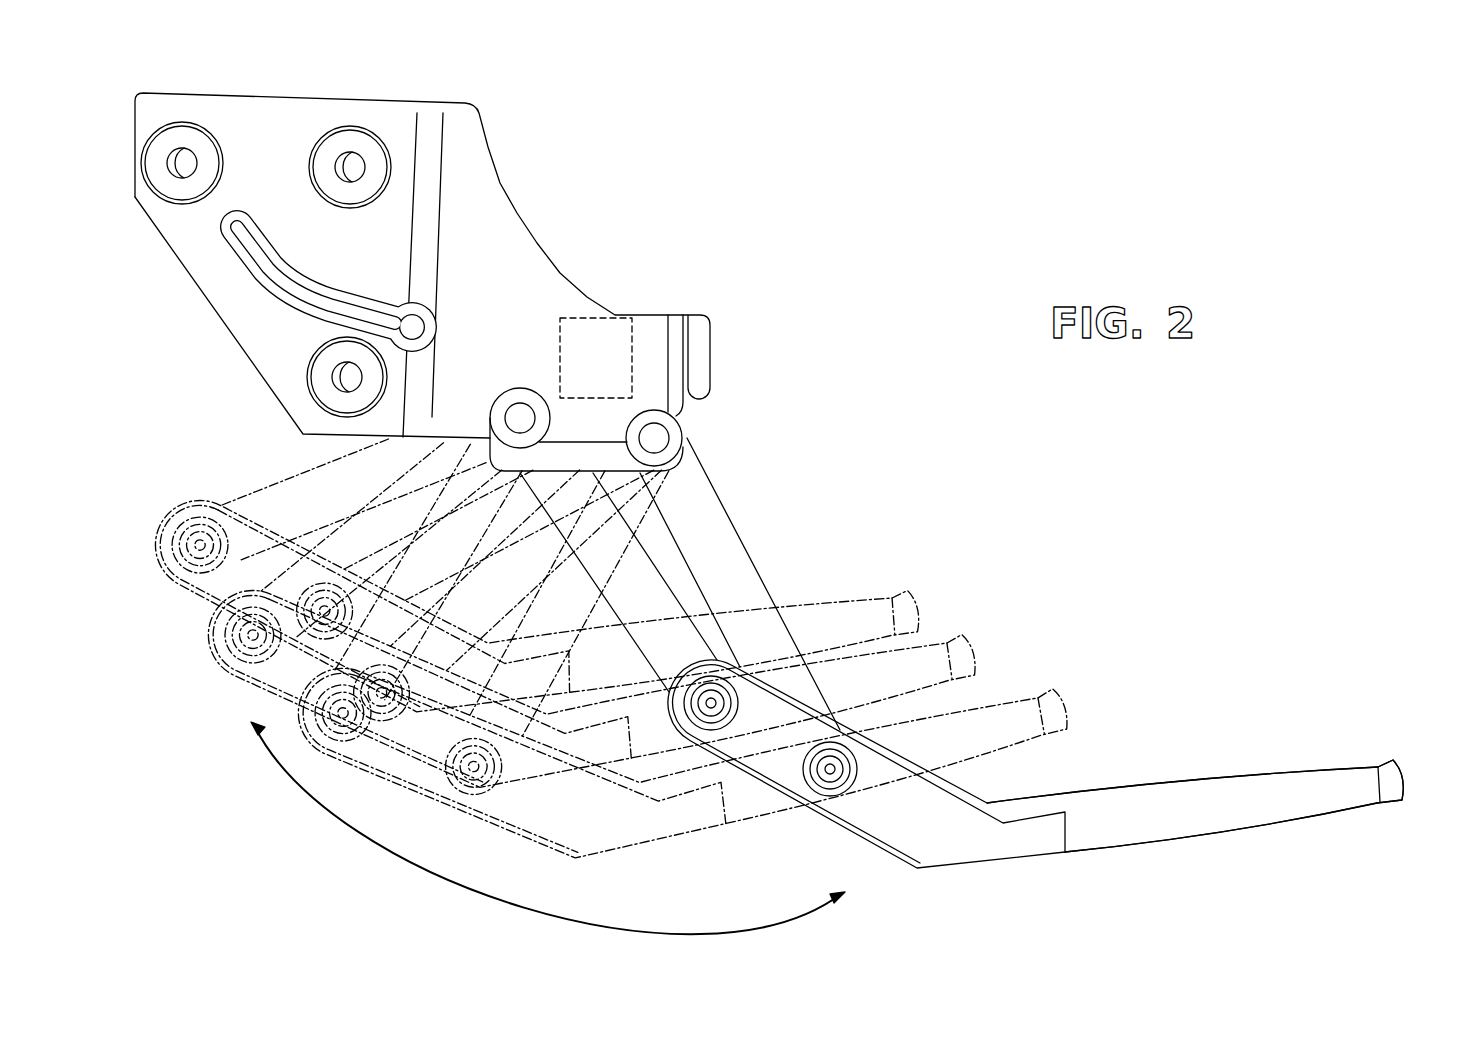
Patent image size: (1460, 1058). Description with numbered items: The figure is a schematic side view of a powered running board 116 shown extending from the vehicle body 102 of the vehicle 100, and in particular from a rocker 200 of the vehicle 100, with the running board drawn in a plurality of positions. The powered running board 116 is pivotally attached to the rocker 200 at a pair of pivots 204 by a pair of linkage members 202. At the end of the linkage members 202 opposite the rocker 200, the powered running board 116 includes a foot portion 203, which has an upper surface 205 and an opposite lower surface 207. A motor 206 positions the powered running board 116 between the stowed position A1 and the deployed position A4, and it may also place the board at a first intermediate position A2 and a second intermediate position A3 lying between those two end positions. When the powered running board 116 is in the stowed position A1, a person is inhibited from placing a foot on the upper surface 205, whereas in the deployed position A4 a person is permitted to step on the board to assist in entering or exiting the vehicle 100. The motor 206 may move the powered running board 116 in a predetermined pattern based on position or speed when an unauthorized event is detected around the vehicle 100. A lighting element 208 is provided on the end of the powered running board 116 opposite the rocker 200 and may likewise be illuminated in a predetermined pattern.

The vehicle 100 is at (592, 91).
The vehicle body 102 is at (111, 107).
The powered running board 116 is at (834, 556).
The rocker 200 is at (470, 147).
The linkage members 202 is at (662, 580).
The foot portion 203 is at (1336, 750).
The pivots 204 is at (522, 418).
The upper surface 205 is at (1253, 770).
The motor 206 is at (604, 318).
The lower surface 207 is at (1252, 828).
The lighting element 208 is at (1398, 777).
The stowed position A1 is at (892, 598).
The first intermediate position A2 is at (947, 643).
The second intermediate position A3 is at (1038, 698).
The deployed position A4 is at (1155, 780).